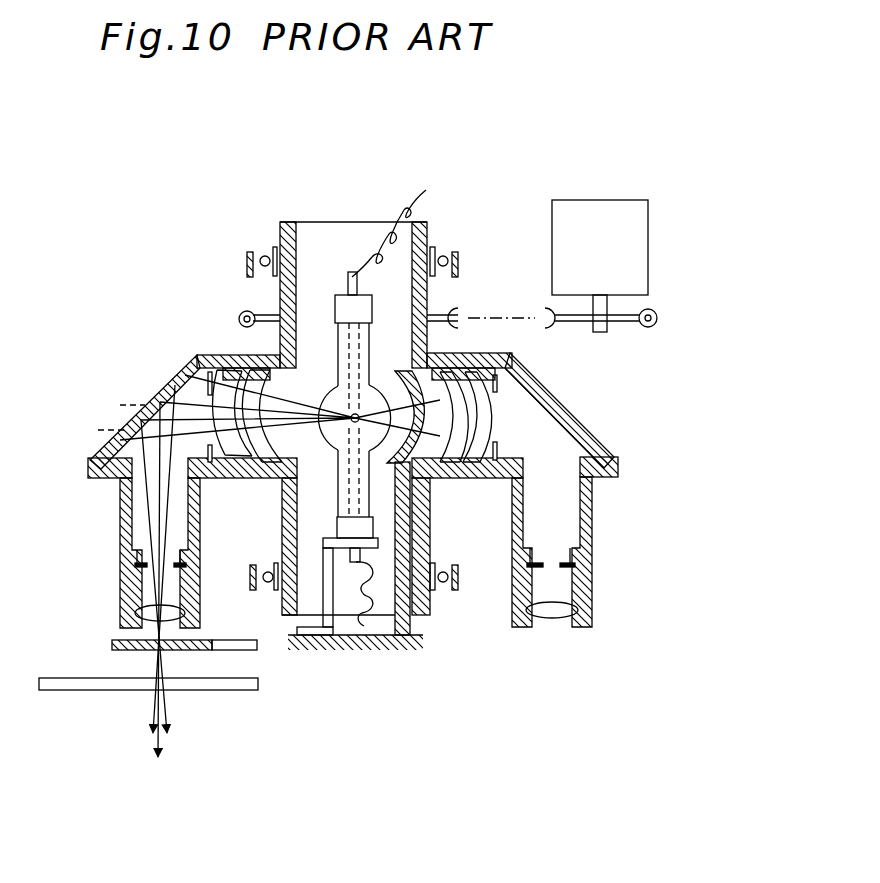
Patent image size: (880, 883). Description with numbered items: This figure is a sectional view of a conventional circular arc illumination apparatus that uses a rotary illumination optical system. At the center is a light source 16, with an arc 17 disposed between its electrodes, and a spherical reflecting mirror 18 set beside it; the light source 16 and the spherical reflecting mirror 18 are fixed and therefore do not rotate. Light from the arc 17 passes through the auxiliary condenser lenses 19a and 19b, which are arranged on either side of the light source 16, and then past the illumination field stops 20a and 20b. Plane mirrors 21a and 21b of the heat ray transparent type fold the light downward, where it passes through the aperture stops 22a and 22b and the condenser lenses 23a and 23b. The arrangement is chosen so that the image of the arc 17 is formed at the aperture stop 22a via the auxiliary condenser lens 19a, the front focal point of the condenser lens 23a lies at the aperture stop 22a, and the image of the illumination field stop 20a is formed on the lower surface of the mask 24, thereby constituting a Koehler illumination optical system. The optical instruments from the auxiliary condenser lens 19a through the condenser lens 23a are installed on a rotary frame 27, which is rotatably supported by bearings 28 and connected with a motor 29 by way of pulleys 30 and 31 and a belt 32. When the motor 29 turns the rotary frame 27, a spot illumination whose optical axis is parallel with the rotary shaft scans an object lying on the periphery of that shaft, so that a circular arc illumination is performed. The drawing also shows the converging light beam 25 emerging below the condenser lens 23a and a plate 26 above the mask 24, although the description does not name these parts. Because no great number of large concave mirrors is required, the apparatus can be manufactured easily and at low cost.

The light source 16 is at (337, 340).
The arc 17 is at (240, 318).
The spherical reflecting mirror 18 is at (427, 347).
The auxiliary condenser lens 19a is at (240, 370).
The auxiliary condenser lens 19b is at (485, 422).
The illumination field stop 20a is at (192, 378).
The illumination field stop 20b is at (505, 445).
The plane mirror 21a is at (135, 412).
The plane mirror 21b is at (560, 418).
The aperture stop 22a is at (135, 563).
The aperture stop 22b is at (585, 587).
The condenser lens 23a is at (142, 604).
The condenser lens 23b is at (557, 618).
The mask 24 is at (90, 688).
The light beam 25 is at (165, 698).
The mask plate 26 is at (113, 645).
The rotary frame 27 is at (283, 303).
The bearing 28 is at (263, 254).
The motor 29 is at (632, 208).
The pulley 30 is at (624, 324).
The pulley 31 is at (255, 316).
The belt 32 is at (540, 322).